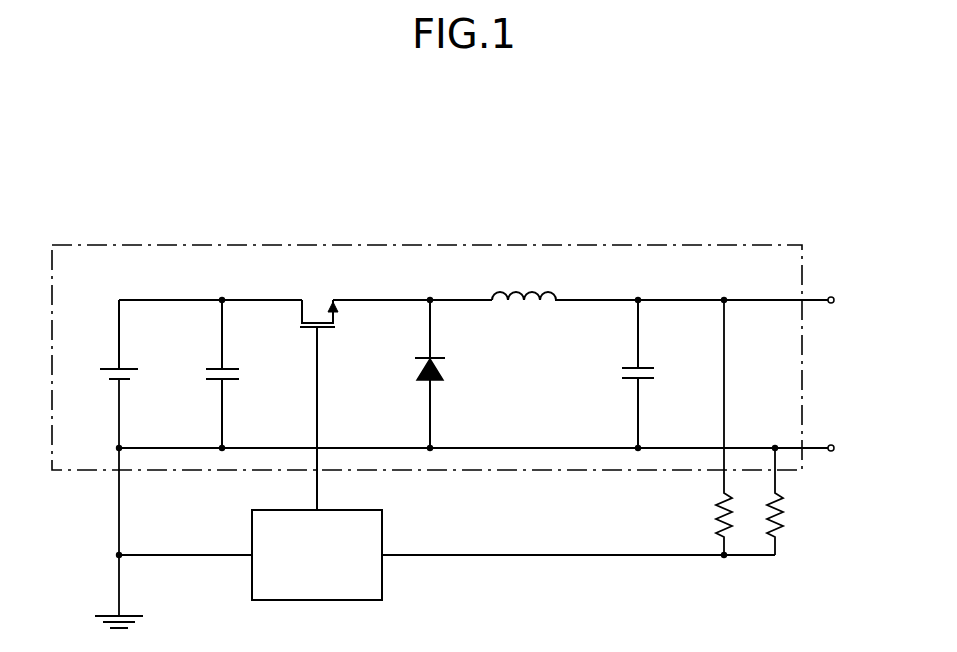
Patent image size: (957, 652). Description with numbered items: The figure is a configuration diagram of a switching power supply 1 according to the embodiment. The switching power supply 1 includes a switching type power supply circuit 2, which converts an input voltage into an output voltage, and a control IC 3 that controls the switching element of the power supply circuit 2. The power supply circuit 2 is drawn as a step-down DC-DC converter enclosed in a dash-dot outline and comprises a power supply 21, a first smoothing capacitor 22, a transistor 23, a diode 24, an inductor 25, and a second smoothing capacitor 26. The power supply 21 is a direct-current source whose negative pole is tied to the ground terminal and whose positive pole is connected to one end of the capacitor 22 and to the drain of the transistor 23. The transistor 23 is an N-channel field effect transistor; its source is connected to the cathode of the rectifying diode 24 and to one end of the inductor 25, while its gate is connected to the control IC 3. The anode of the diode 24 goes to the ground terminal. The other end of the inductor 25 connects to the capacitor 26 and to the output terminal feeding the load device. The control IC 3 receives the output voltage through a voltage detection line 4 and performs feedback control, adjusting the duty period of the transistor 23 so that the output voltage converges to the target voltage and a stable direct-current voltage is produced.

The switching power supply 1 is at (217, 172).
The power supply circuit 2 is at (621, 245).
The control IC 3 is at (382, 520).
The voltage detection line 4 is at (497, 556).
The power supply 21 is at (130, 368).
The capacitor (C1) 22 is at (239, 368).
The transistor (Q1) 23 is at (300, 309).
The diode (D1) 24 is at (446, 366).
The inductor (L1) 25 is at (552, 294).
The capacitor (C2) 26 is at (641, 367).